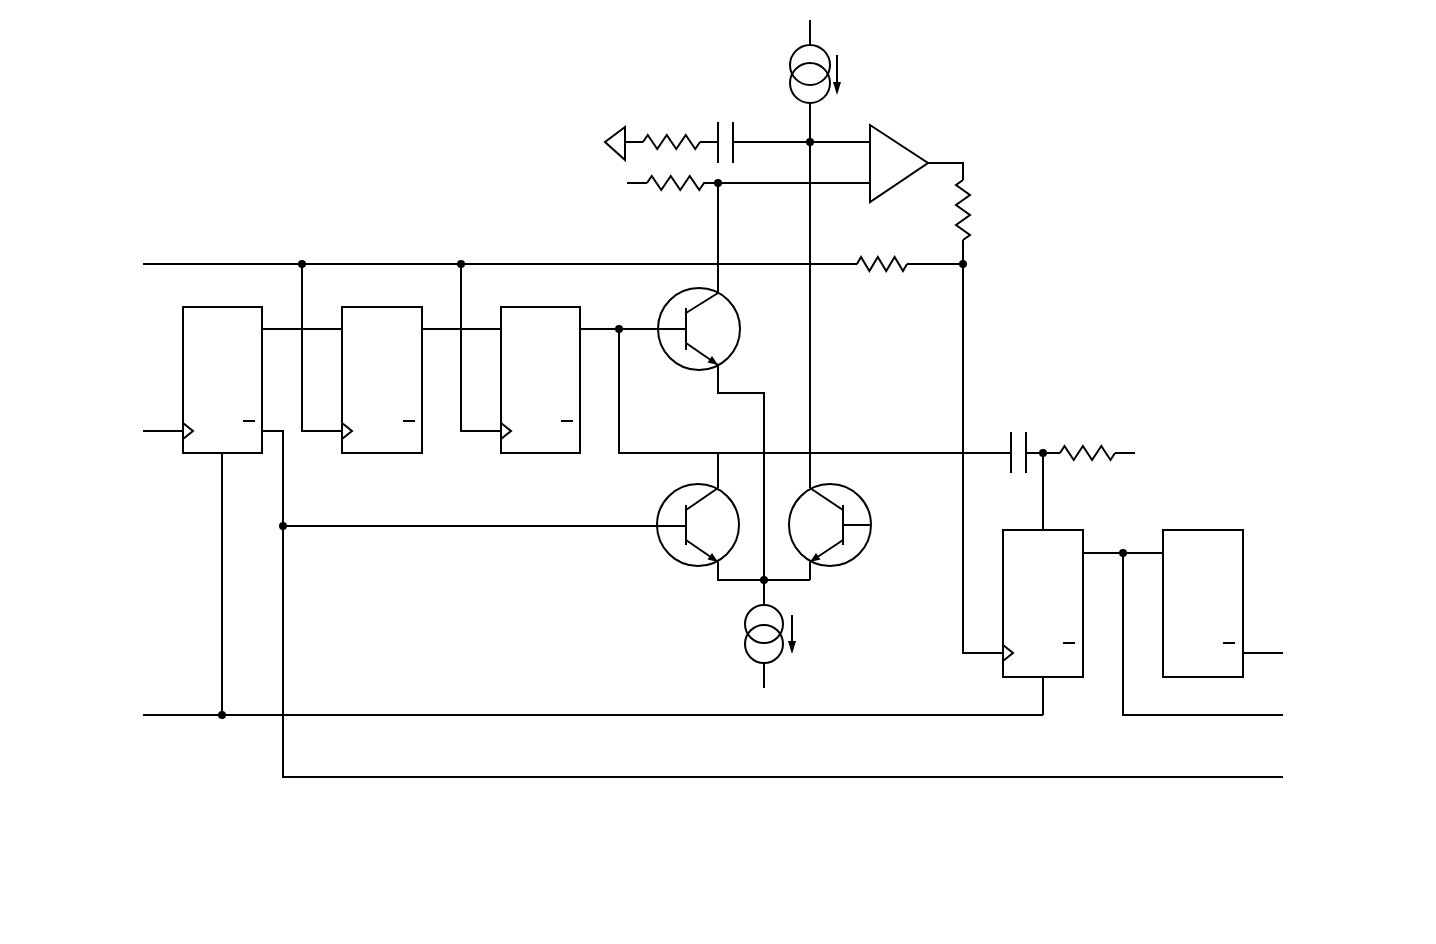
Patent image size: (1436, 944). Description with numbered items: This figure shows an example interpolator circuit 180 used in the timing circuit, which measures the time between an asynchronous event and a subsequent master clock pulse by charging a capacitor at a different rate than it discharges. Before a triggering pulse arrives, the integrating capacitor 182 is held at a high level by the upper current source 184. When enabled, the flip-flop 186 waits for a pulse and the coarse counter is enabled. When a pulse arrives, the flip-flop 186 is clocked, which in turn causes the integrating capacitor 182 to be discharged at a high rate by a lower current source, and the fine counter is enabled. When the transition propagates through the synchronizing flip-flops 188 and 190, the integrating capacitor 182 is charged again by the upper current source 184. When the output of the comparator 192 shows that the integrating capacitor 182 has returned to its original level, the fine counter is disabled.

The interpolator circuit 180 is at (1187, 128).
The integrating capacitor 182 is at (1026, 441).
The upper current source 184 is at (791, 66).
The flip-flop 186 is at (222, 305).
The synchronizing flip-flop 188 is at (384, 305).
The synchronizing flip-flop 190 is at (542, 305).
The comparator 192 is at (901, 141).